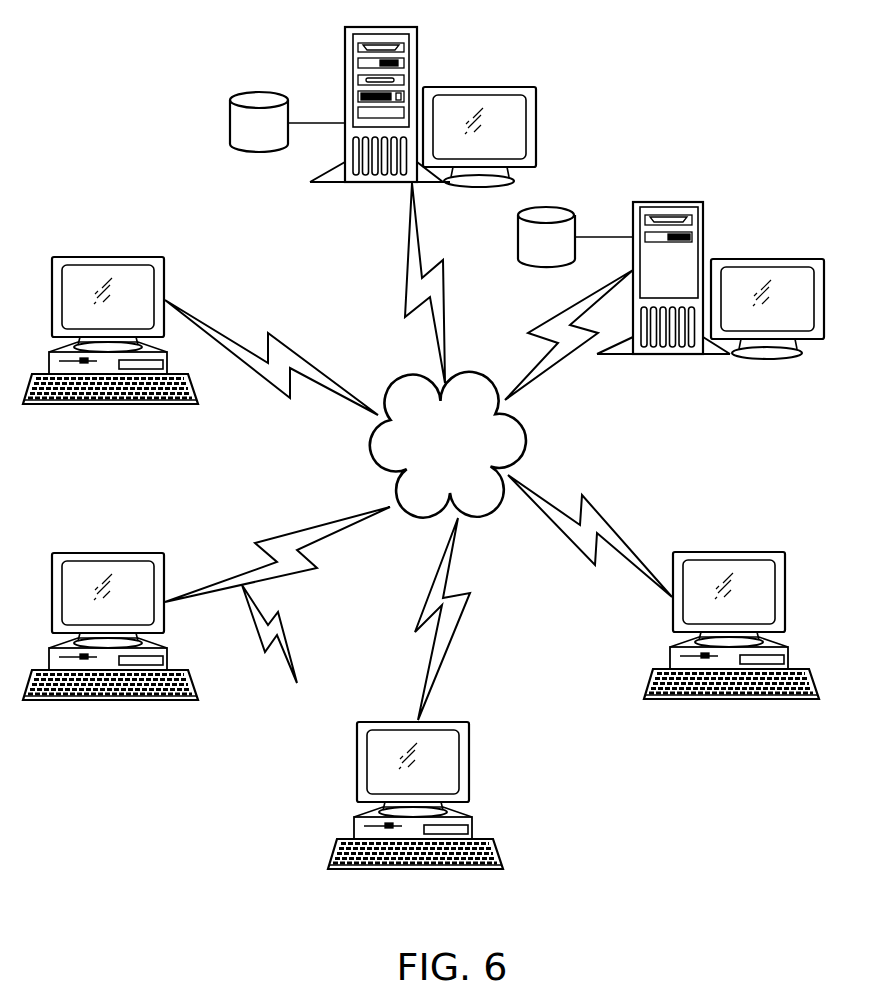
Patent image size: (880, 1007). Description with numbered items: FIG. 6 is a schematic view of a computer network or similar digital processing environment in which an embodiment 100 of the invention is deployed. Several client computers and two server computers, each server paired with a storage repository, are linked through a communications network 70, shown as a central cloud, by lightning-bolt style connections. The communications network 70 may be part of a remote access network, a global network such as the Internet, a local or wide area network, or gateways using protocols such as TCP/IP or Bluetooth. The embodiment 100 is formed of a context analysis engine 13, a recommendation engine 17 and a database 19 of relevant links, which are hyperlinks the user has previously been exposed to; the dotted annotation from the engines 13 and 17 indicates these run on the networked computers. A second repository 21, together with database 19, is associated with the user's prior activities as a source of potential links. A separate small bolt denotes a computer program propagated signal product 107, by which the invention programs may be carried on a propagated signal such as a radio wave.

The embodiment 100 is at (193, 28).
The communications network 70 is at (458, 478).
The repository 21 is at (247, 139).
The database 19 is at (534, 251).
The computer program propagated signal product 107 is at (285, 623).
The context analysis engine 13 is at (725, 365).
The recommendation engine 17 is at (730, 547).